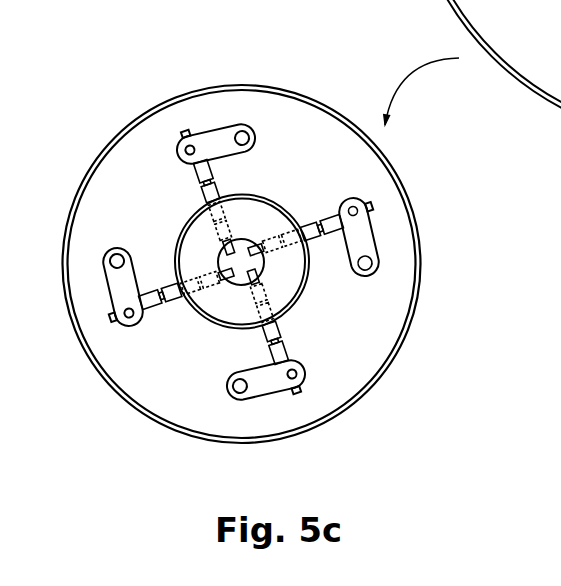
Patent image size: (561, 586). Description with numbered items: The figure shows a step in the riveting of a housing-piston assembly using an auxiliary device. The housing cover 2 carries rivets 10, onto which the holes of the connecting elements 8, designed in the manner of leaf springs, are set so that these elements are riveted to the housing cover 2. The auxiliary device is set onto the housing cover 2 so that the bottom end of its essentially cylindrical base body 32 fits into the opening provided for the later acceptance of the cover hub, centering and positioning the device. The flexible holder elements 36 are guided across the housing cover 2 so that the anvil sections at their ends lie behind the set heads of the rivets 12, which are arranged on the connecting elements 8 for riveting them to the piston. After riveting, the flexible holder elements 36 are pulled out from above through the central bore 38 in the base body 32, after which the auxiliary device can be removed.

The housing cover 2 is at (153, 170).
The connecting elements 8 is at (368, 240).
The rivets 10 is at (372, 265).
The rivets 12 is at (358, 210).
The base body 32 is at (222, 310).
The flexible holder elements 36 is at (320, 245).
The bore 38 is at (238, 259).